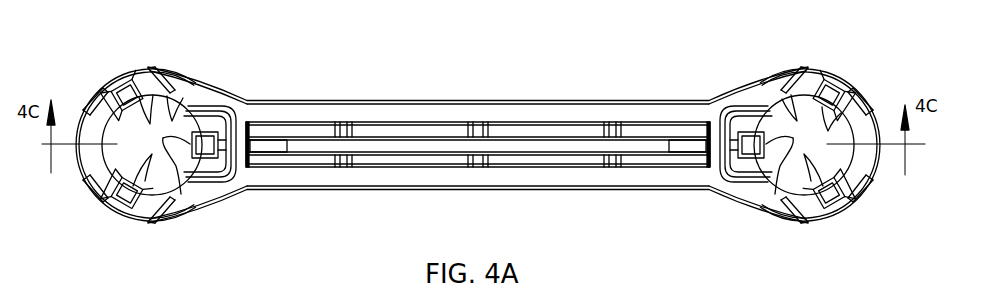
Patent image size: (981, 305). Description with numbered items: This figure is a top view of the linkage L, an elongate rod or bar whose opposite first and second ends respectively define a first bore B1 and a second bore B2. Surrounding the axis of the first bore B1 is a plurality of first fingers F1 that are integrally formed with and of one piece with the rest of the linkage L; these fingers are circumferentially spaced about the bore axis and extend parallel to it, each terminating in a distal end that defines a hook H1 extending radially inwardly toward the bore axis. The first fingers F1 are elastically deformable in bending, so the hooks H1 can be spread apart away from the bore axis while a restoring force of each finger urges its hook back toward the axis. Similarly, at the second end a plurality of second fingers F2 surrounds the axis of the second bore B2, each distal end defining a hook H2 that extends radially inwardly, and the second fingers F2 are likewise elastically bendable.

The linkage L is at (338, 178).
The first bore B1 is at (175, 120).
The second bore B2 is at (797, 119).
The first fingers F1 is at (121, 76).
The second fingers F2 is at (746, 147).
The hook H1 is at (150, 122).
The hook H2 is at (832, 125).